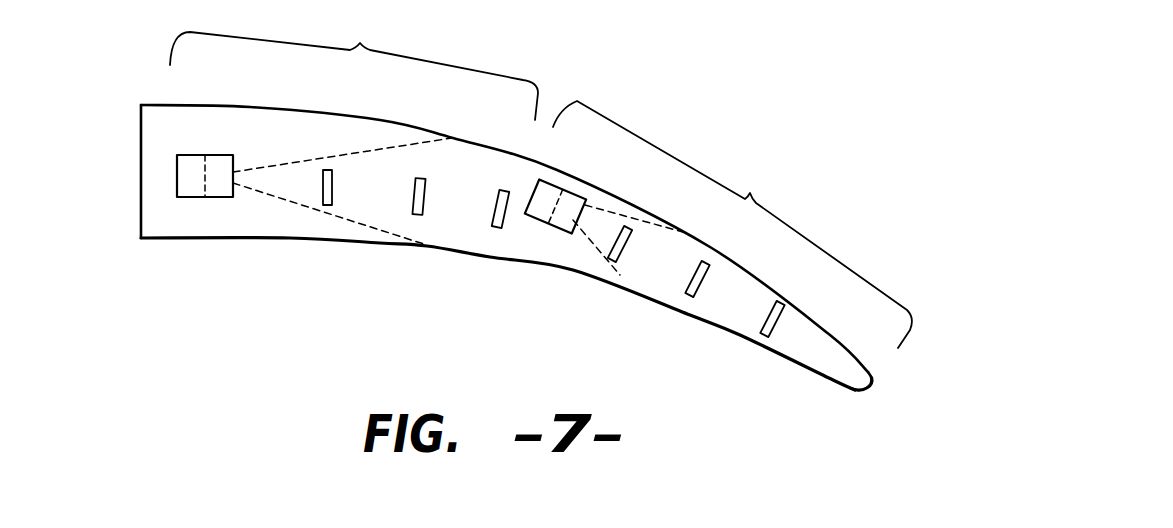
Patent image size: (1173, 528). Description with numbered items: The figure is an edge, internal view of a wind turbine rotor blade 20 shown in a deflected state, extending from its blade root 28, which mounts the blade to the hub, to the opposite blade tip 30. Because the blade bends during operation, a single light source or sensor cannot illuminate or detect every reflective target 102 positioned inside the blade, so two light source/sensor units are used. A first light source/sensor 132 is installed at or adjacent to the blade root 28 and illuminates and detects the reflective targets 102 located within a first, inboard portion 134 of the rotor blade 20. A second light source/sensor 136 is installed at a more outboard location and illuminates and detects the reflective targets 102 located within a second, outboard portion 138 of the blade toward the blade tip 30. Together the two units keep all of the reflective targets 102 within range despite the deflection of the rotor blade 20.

The rotor blade 20 is at (506, 207).
The blade root 28 is at (162, 105).
The blade tip 30 is at (875, 382).
The reflective target 102 is at (332, 192).
The first light source/sensor 132 is at (185, 198).
The first, inboard portion 134 is at (354, 63).
The second light source/sensor 136 is at (533, 220).
The second, outboard portion 138 is at (732, 224).